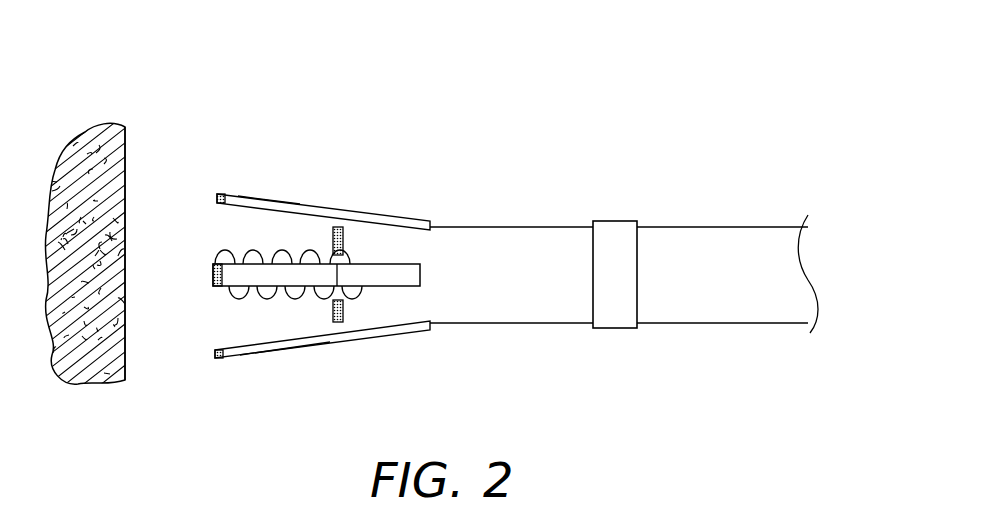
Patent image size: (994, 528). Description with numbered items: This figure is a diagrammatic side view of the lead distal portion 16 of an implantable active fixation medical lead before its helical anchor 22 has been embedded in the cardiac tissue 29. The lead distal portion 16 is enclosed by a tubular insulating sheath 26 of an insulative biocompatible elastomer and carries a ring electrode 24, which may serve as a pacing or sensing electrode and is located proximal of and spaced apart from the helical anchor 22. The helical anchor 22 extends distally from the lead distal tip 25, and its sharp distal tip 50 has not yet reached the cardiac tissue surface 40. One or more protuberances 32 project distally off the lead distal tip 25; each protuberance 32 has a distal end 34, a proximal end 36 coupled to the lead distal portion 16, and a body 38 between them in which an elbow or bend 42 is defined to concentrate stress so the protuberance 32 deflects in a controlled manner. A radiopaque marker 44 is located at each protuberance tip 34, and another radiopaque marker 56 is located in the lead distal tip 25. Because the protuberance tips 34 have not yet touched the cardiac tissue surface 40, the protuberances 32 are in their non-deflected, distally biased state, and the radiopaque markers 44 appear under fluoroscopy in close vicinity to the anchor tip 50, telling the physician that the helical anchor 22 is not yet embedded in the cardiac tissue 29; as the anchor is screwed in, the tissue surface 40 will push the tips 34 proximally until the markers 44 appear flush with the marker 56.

The lead distal portion 16 is at (584, 96).
The helical anchor 22 is at (262, 252).
The ring electrode 24 is at (612, 221).
The lead distal tip 25 is at (330, 215).
The tubular insulating sheath 26 is at (725, 323).
The cardiac tissue 29 is at (92, 150).
The protuberance 32 is at (287, 197).
The protuberance distal end 34 is at (216, 200).
The protuberance proximal end 36 is at (430, 224).
The protuberance body 38 is at (238, 190).
The cardiac tissue surface 40 is at (125, 367).
The elbow or bend 42 is at (336, 226).
The radiopaque marker 44 is at (217, 196).
The helical anchor sharp distal tip 50 is at (215, 290).
The radiopaque marker of the lead distal tip 56 is at (345, 233).